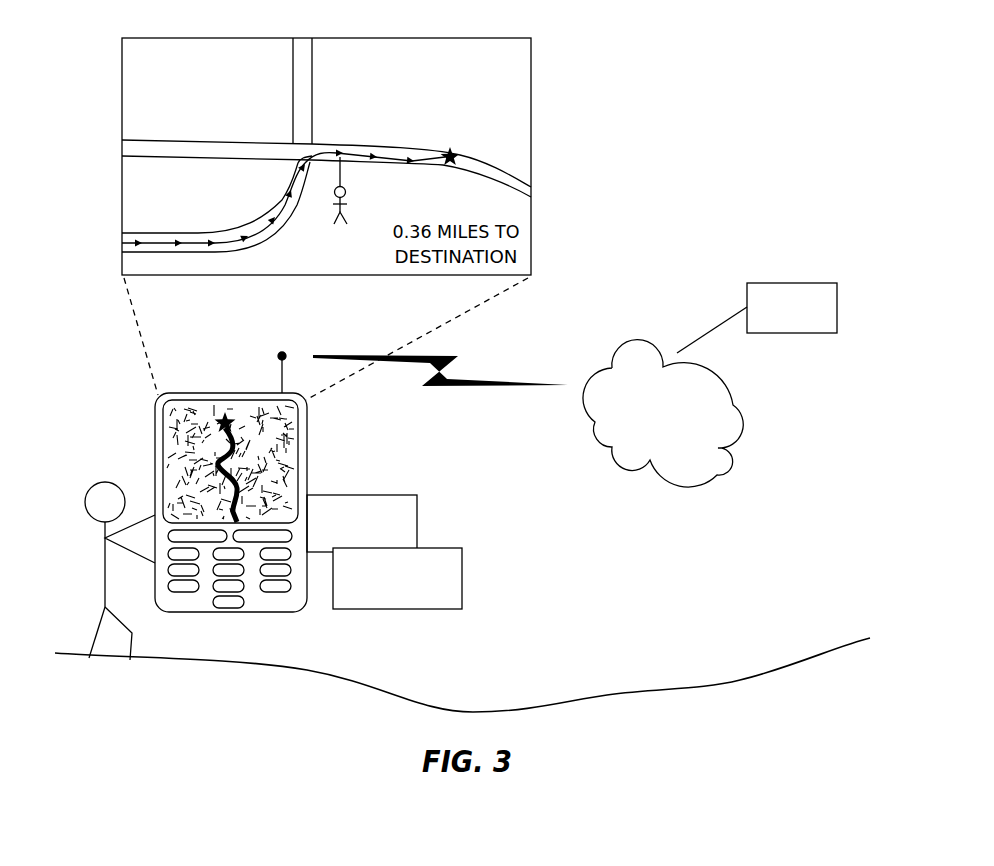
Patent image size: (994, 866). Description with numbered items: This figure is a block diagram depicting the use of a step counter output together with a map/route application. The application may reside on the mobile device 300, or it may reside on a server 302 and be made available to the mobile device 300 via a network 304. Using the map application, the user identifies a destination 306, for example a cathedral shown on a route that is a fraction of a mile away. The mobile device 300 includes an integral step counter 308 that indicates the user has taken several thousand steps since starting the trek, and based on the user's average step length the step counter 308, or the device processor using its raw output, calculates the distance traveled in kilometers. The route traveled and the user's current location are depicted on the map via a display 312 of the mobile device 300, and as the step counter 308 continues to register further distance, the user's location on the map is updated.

The mobile device 300 is at (212, 393).
The server 302 is at (802, 283).
The network 304 is at (637, 340).
The destination 306 is at (460, 155).
The step counter 308 is at (380, 495).
The display 312 is at (277, 443).